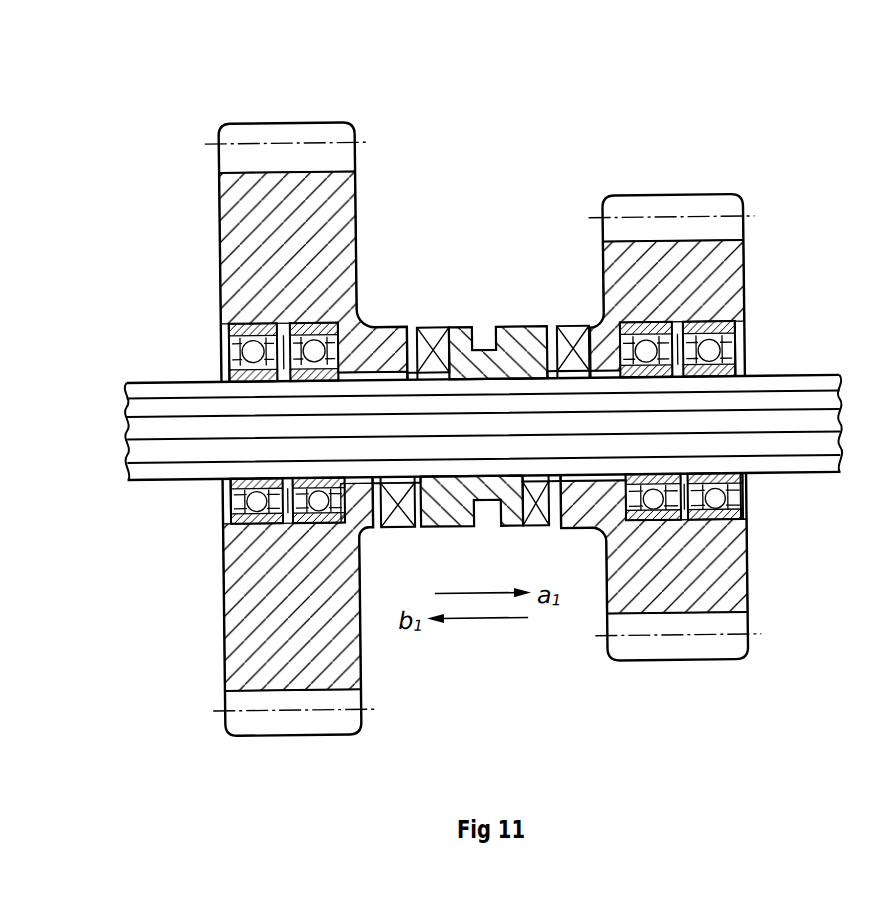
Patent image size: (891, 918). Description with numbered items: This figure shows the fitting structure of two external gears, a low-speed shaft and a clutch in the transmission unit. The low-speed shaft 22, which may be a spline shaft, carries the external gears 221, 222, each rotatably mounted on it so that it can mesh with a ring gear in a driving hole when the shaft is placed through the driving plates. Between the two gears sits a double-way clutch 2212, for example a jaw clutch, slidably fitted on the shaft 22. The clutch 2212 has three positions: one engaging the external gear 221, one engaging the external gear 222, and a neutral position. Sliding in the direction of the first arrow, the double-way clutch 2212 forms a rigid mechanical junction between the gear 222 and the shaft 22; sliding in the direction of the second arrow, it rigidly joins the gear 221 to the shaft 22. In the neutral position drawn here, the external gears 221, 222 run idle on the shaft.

The low-speed shaft 22 is at (186, 385).
The external gear 221 is at (305, 186).
The double-way clutch 2212 is at (466, 330).
The external gear 222 is at (696, 207).